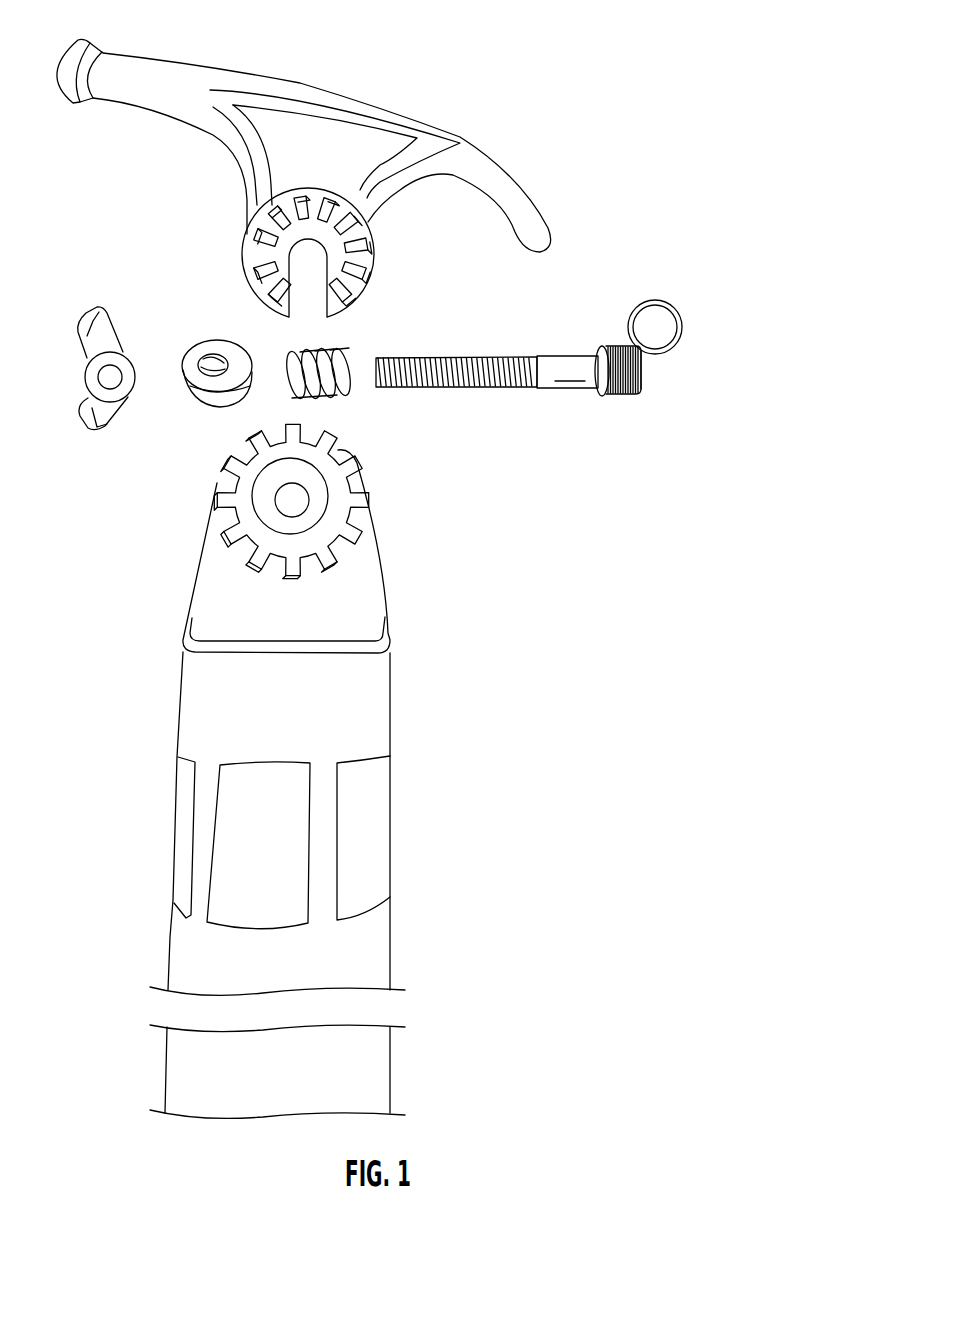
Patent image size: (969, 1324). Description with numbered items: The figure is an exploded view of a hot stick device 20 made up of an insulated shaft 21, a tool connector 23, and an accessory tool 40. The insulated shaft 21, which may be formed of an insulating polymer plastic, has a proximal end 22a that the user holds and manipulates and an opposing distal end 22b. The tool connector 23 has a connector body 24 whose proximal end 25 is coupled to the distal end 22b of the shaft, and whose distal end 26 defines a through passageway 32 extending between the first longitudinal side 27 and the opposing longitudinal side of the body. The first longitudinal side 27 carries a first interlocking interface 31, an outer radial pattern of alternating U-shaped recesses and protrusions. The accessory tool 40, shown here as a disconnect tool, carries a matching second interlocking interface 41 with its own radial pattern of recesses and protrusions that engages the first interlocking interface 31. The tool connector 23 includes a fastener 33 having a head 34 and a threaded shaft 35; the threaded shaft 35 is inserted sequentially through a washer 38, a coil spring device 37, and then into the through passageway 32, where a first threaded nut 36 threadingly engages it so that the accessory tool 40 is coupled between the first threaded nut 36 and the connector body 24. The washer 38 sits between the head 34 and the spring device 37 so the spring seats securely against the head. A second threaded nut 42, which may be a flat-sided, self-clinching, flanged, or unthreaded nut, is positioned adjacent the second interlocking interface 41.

The hot stick device 20 is at (650, 166).
The insulated shaft 21 is at (465, 1030).
The proximal end 22a is at (336, 1102).
The distal end 22b is at (292, 981).
The tool connector 23 is at (744, 364).
The connector body 24 is at (396, 600).
The proximal end 25 is at (372, 822).
The distal end 26 is at (214, 600).
The first longitudinal side 27 is at (346, 686).
The first interlocking interface 31 is at (350, 500).
The through passageway 32 is at (276, 507).
The fastener 33 is at (586, 331).
The head 34 is at (643, 370).
The threaded shaft 35 is at (483, 356).
The first threaded nut 36 is at (97, 362).
The spring device 37 is at (356, 352).
The washer 38 is at (667, 305).
The accessory tool 40 is at (200, 86).
The second interlocking interface 41 is at (308, 196).
The second threaded nut 42 is at (214, 356).